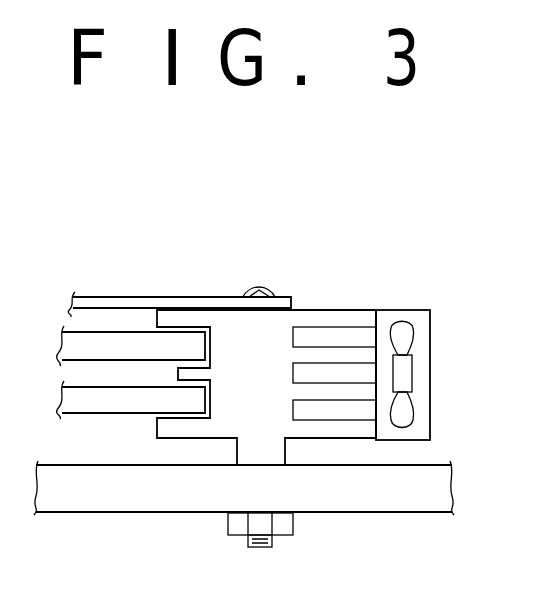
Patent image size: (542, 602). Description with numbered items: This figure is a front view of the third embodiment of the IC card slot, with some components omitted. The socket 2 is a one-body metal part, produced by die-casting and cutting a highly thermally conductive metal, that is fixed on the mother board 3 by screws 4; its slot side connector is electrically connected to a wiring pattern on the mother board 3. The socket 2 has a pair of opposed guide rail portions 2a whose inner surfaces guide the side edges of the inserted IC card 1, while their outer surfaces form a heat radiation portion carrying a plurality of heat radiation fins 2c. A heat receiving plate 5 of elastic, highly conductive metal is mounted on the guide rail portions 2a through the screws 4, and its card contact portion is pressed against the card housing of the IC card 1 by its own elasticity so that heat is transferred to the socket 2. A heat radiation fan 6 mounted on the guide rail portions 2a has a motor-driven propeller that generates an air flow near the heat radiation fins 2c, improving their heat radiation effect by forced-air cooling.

The IC card 1 is at (122, 342).
The socket 2 is at (329, 294).
The guide rail portion 2a is at (303, 338).
The heat radiation fins 2c is at (352, 312).
The mother board 3 is at (135, 512).
The screws 4 is at (258, 288).
The heat receiving plate 5 is at (207, 297).
The heat radiation fan 6 is at (427, 362).